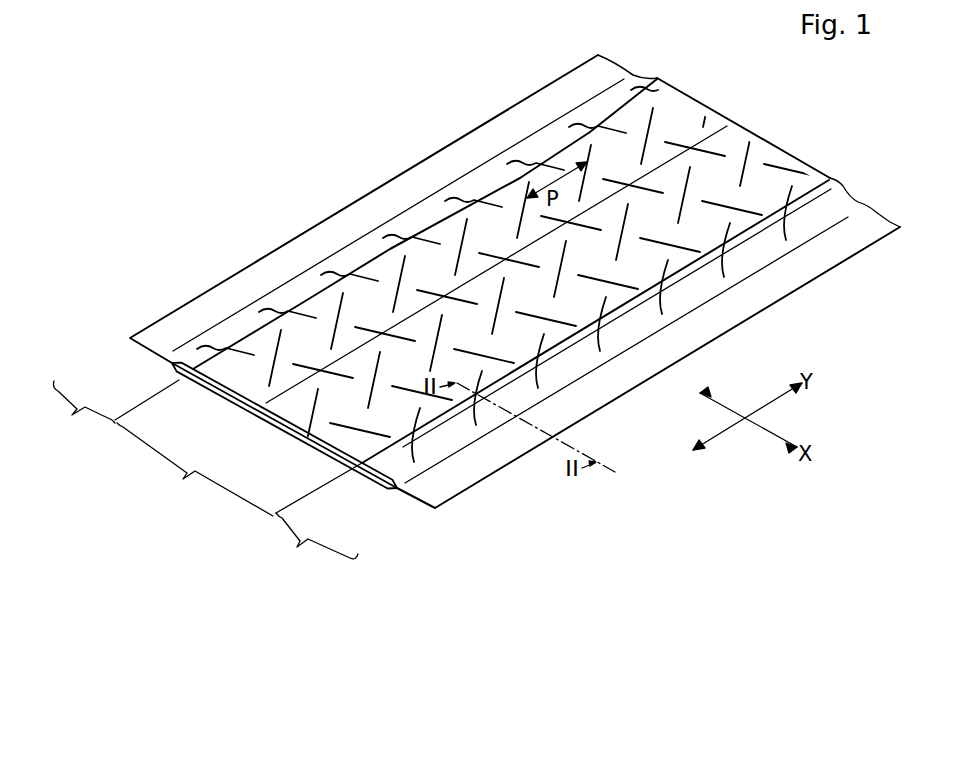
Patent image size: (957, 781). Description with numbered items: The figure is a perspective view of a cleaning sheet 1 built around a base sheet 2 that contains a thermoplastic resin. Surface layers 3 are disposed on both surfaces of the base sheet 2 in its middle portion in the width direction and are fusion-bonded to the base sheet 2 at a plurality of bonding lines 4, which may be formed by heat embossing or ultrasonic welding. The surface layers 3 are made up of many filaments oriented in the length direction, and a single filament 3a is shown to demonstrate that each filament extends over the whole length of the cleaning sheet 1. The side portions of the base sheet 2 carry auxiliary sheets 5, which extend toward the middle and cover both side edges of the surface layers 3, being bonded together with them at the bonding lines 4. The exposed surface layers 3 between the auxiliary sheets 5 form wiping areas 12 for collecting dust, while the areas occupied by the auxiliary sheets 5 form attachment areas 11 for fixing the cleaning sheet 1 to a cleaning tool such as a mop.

The cleaning sheet 1 is at (390, 168).
The base sheet 2 is at (243, 405).
The surface layers 3 is at (301, 440).
The filament 3a is at (727, 126).
The bonding lines 4 is at (683, 137).
The auxiliary sheets 5 is at (247, 277).
The attachment areas 11 is at (206, 479).
The wiping areas 12 is at (238, 448).